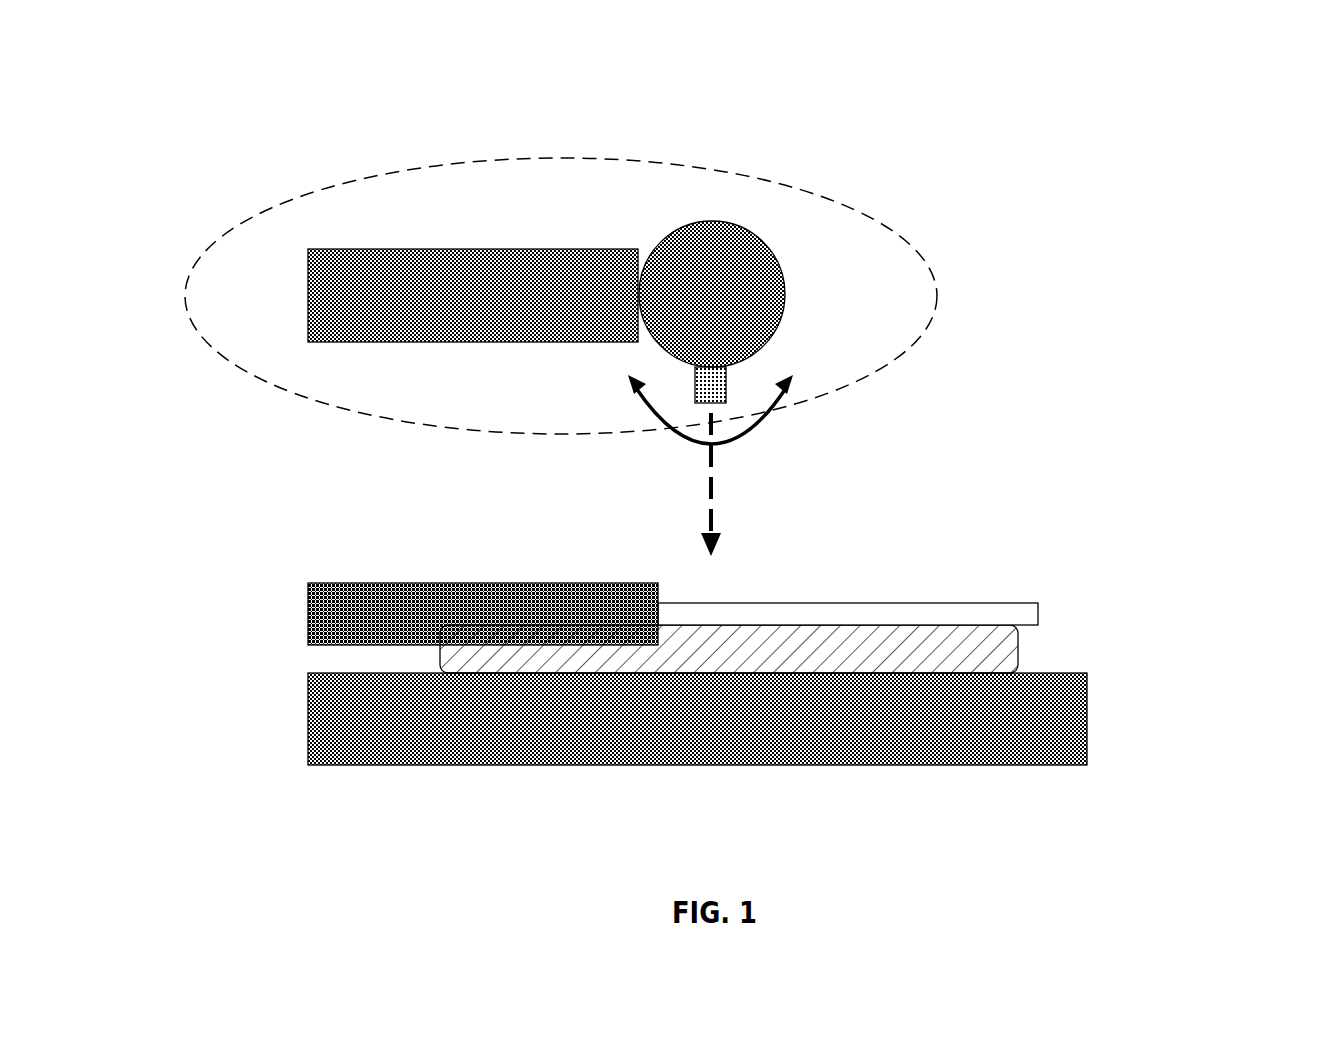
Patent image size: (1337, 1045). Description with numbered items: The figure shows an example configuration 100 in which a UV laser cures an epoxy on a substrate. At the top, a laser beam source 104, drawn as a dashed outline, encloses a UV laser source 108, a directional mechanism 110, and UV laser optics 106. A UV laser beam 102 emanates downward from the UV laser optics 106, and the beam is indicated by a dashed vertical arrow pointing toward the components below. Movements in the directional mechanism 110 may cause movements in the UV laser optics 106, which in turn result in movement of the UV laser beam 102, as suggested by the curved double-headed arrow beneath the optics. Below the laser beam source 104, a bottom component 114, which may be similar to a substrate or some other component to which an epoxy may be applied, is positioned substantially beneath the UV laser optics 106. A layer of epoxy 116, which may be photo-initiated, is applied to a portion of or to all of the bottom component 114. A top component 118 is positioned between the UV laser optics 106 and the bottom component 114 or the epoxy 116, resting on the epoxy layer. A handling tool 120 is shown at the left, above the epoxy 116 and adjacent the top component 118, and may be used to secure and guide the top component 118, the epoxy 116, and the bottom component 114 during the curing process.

The UV laser curing configuration 100 is at (1188, 104).
The UV laser beam 102 is at (712, 492).
The laser beam source 104 is at (653, 162).
The UV laser optics 106 is at (727, 377).
The UV laser source 108 is at (485, 249).
The directional mechanism 110 is at (760, 240).
The bottom component 114 is at (1087, 720).
The epoxy 116 is at (1018, 650).
The top component 118 is at (1038, 605).
The handling tool 120 is at (410, 582).